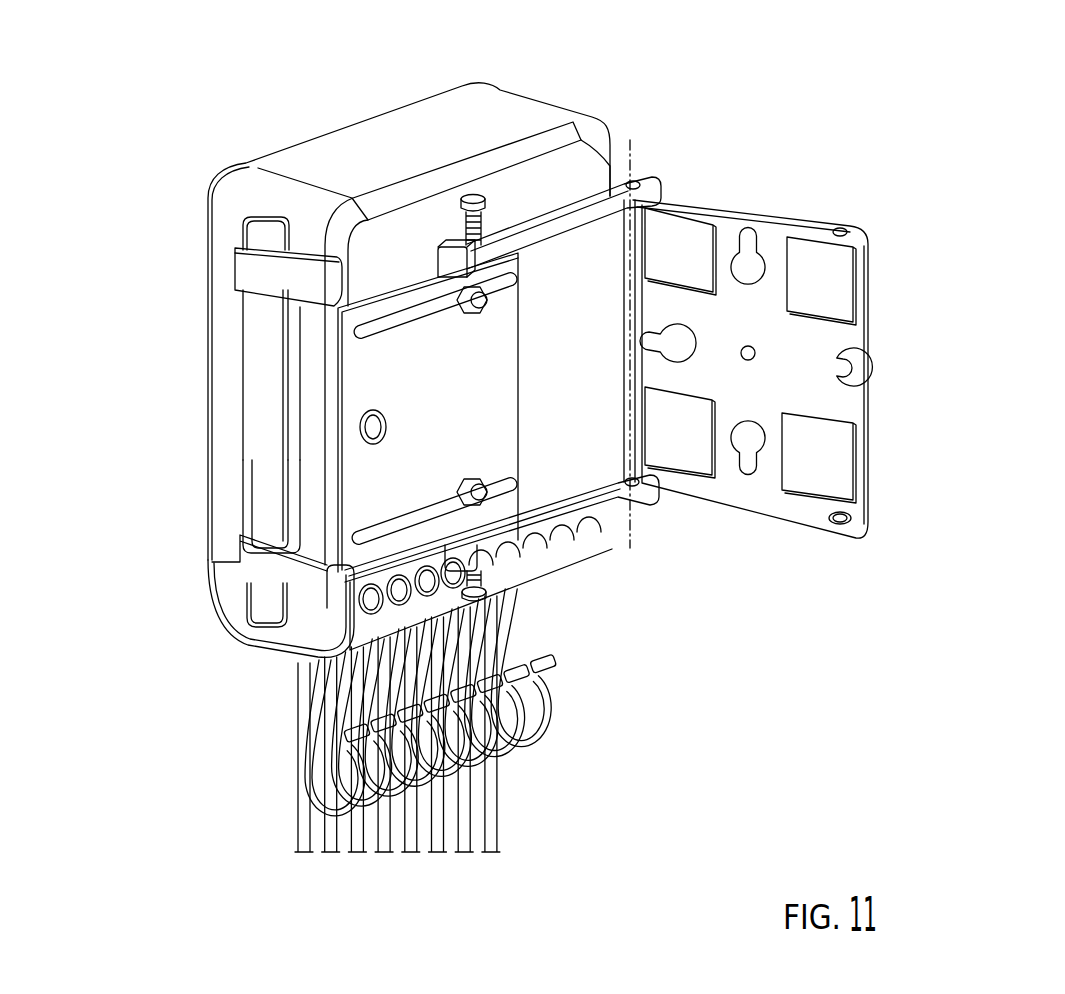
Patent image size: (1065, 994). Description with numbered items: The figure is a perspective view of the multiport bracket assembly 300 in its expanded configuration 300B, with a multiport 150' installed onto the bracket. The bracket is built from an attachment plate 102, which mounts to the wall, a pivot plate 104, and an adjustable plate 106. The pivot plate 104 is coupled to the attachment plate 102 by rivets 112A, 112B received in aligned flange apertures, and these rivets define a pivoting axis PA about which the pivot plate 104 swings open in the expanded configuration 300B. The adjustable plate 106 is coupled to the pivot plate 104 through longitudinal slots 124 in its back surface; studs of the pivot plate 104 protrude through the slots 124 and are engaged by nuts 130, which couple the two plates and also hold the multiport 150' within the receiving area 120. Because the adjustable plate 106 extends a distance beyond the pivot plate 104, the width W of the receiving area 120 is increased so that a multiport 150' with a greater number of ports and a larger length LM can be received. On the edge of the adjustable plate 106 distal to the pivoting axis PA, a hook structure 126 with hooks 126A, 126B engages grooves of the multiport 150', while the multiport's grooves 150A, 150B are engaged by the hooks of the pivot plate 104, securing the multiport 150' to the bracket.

The receiving area 120 is at (278, 152).
The longitudinal slot 124 is at (390, 292).
The rivet 112A is at (476, 196).
The multiport 150' is at (549, 146).
The pivot plate 104 is at (582, 333).
The attachment plate 102 is at (852, 345).
The hook 126A is at (277, 277).
The groove 150A is at (202, 287).
The hook structure 126 is at (313, 453).
The adjustable plate 106 is at (432, 458).
The groove 150B is at (202, 576).
The hook 126B is at (270, 567).
The nut 130 is at (466, 312).
The rivet 112B is at (497, 607).
The multiport bracket assembly 300 is at (848, 715).
The expanded configuration 300B is at (955, 817).
The width W is at (348, 428).
The pivoting axis PA is at (651, 344).
The length LM is at (340, 749).